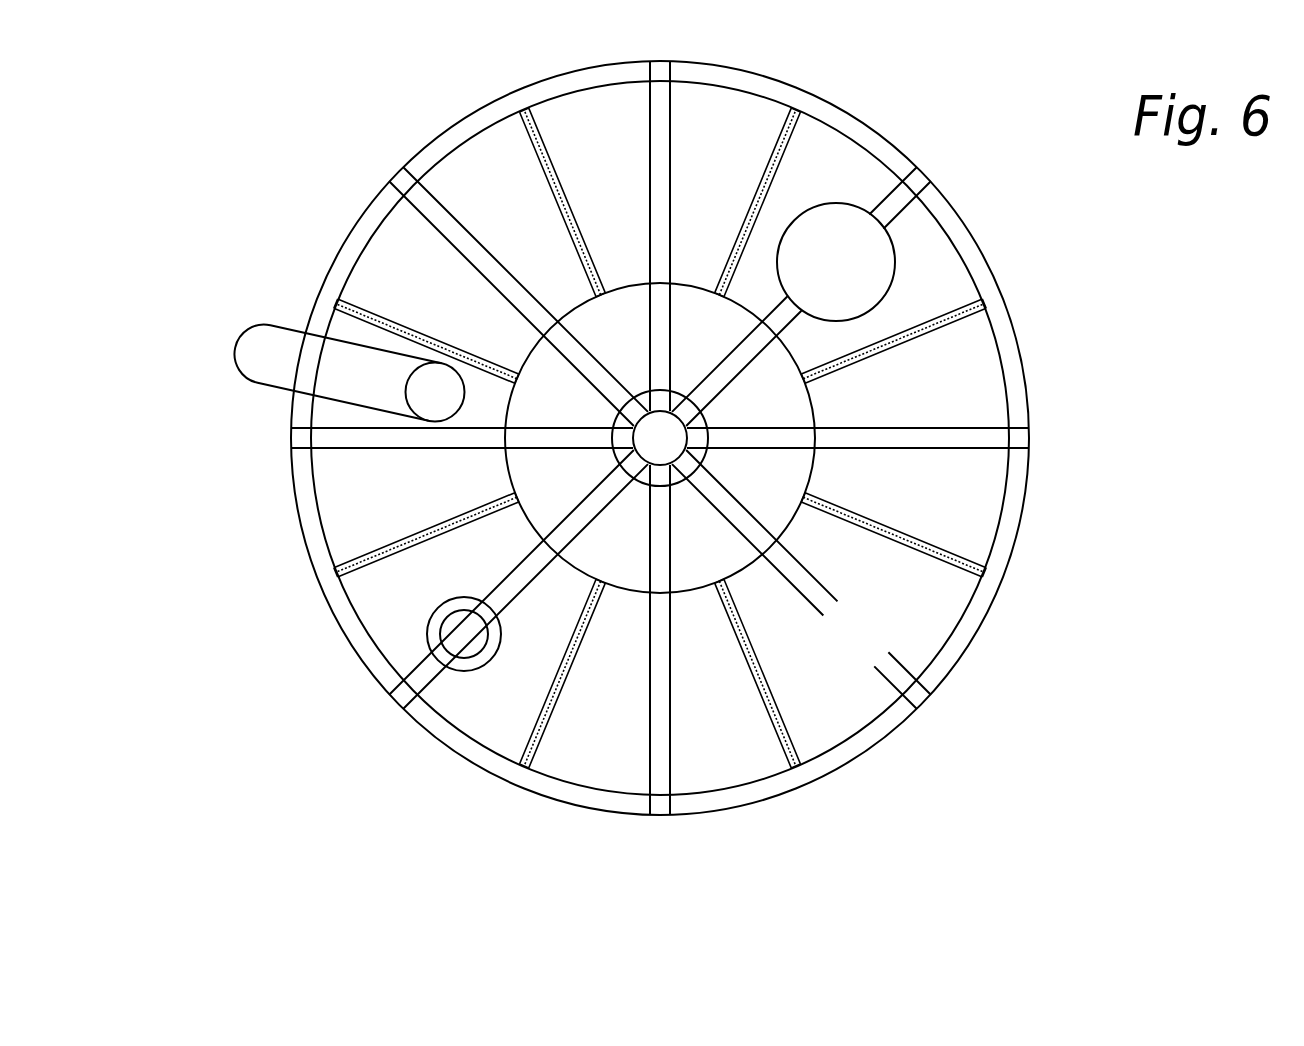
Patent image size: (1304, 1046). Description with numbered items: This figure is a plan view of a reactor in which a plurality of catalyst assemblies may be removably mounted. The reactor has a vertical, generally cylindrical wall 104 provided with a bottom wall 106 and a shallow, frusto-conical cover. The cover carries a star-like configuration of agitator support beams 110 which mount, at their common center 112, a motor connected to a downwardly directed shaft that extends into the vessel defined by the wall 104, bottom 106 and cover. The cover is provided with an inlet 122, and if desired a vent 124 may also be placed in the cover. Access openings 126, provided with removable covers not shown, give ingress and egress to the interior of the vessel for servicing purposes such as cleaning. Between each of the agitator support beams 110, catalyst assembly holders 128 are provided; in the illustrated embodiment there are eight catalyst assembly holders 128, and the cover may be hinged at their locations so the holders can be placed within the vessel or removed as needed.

The cylindrical wall 104 is at (725, 796).
The bottom wall 106 is at (852, 702).
The agitator support beams 110 is at (937, 442).
The common center 112 is at (648, 468).
The inlet 122 is at (470, 660).
The vent 124 is at (263, 367).
The access openings 126 is at (872, 261).
The catalyst assembly holders 128 is at (945, 547).